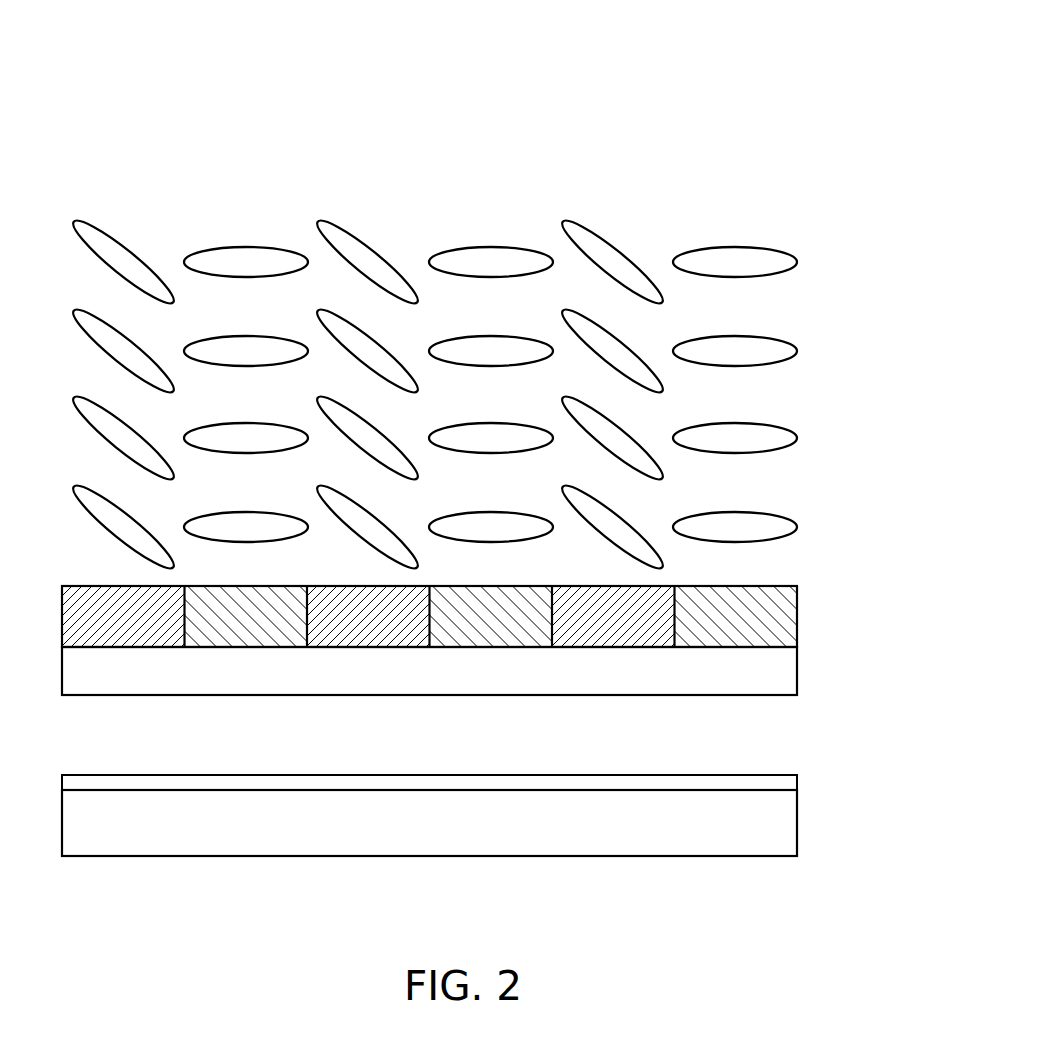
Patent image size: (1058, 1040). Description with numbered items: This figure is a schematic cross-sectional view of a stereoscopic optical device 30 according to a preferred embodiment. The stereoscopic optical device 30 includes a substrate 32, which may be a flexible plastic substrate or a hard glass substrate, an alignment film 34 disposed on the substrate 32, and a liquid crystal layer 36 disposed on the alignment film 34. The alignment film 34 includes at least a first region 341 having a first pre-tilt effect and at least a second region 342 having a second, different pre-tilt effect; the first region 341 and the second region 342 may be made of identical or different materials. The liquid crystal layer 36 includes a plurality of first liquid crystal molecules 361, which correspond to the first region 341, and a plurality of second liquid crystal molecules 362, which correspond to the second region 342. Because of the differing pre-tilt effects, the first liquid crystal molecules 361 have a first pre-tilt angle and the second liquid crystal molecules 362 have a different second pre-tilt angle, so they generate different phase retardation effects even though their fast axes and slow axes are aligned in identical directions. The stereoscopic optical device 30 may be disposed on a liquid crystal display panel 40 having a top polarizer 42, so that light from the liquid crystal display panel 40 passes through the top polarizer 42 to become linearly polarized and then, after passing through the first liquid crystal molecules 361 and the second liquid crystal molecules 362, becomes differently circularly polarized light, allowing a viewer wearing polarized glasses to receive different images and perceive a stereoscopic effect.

The stereoscopic optical device 30 is at (757, 62).
The substrate 32 is at (413, 686).
The alignment film 34 is at (797, 613).
The first region 341 is at (224, 632).
The second region 342 is at (101, 632).
The liquid crystal layer 36 is at (772, 170).
The first liquid crystal molecules 361 is at (246, 247).
The second liquid crystal molecules 362 is at (136, 248).
The liquid crystal display panel 40 is at (413, 836).
The top polarizer 42 is at (775, 777).